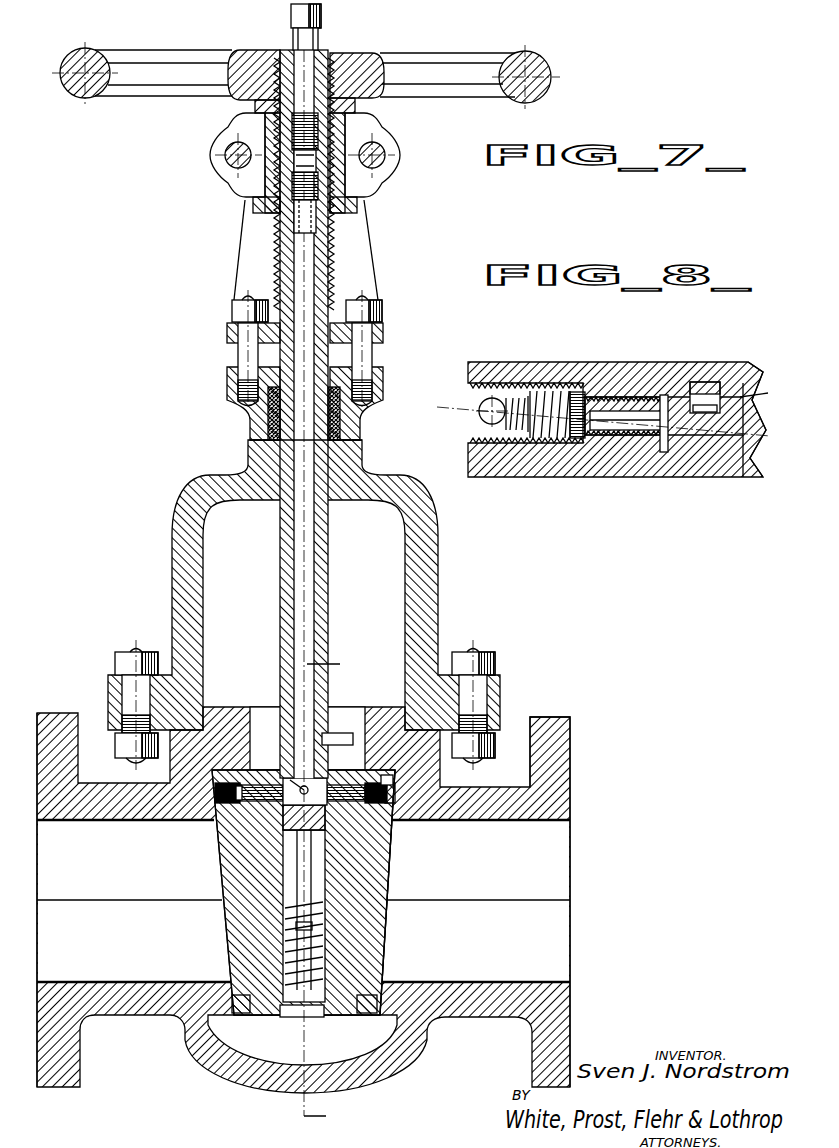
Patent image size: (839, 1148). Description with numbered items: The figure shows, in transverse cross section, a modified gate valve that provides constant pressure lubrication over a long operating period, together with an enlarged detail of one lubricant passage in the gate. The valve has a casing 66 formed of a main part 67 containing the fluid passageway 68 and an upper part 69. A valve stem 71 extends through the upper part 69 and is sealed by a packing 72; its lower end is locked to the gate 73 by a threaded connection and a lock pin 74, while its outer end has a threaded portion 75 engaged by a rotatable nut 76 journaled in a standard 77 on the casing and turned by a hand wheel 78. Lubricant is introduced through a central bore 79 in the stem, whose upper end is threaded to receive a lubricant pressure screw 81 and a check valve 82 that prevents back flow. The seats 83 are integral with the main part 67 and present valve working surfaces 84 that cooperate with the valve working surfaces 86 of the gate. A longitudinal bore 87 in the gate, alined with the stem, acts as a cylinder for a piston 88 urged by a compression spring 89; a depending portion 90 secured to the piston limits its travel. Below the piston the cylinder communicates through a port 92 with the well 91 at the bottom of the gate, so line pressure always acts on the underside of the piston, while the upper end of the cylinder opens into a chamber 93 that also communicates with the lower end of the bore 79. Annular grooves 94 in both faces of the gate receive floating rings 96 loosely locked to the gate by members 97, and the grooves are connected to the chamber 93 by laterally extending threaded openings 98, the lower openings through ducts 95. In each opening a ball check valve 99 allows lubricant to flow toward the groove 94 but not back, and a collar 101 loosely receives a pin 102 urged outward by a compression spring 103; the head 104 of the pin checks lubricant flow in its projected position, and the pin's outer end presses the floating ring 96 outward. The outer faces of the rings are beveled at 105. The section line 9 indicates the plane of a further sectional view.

In FIG. 7, the section line 9- 9 is at (340, 661).
In FIG. 7, the casing 66 is at (562, 720).
In FIG. 8, the casing 66 is at (752, 470).
In FIG. 7, the main part 67 is at (550, 756).
In FIG. 8, the main part 67 is at (750, 368).
In FIG. 7, the fluid passageway 68 is at (553, 838).
In FIG. 7, the upper part 69 is at (430, 580).
In FIG. 7, the valve stem 71 is at (326, 578).
In FIG. 7, the packing 72 is at (268, 420).
In FIG. 7, the gate 73 is at (357, 765).
In FIG. 8, the gate 73 is at (518, 462).
In FIG. 7, the lock pin 74 is at (340, 733).
In FIG. 7, the threaded portion 75 is at (330, 267).
In FIG. 7, the rotatable nut 76 is at (255, 103).
In FIG. 7, the standard 77 is at (240, 262).
In FIG. 7, the hand wheel 78 is at (76, 91).
In FIG. 7, the central bore 79 is at (300, 449).
In FIG. 7, the lubricant pressure screw 81 is at (319, 40).
In FIG. 7, the check valve 82 is at (300, 218).
In FIG. 7, the seats 83 is at (212, 808).
In FIG. 8, the seats 83 is at (742, 455).
In FIG. 7, the valve working surfaces 84 is at (186, 812).
In FIG. 8, the valve working surfaces 84 is at (764, 388).
In FIG. 7, the valve working surfaces 86 is at (226, 958).
In FIG. 7, the bore 87 is at (290, 906).
In FIG. 7, the piston 88 is at (284, 818).
In FIG. 7, the compression spring 89 is at (322, 926).
In FIG. 7, the depending portion 90 is at (300, 870).
In FIG. 7, the well 91 is at (263, 1047).
In FIG. 7, the port 92 is at (320, 1047).
In FIG. 7, the chamber 93 is at (396, 848).
In FIG. 8, the chamber 93 is at (435, 430).
In FIG. 7, the annular grooves 94 is at (224, 760).
In FIG. 8, the annular grooves 94 is at (664, 452).
In FIG. 7, the ducts 95 is at (275, 727).
In FIG. 7, the floating rings 96 is at (400, 800).
In FIG. 8, the floating rings 96 is at (700, 445).
In FIG. 7, the members 97 is at (388, 775).
In FIG. 8, the members 97 is at (705, 382).
In FIG. 8, the threaded openings 98 is at (520, 438).
In FIG. 8, the check valves 99 is at (496, 395).
In FIG. 7, the collar 101 is at (242, 776).
In FIG. 8, the collar 101 is at (610, 397).
In FIG. 8, the pin 102 is at (608, 430).
In FIG. 8, the compression spring 103 is at (538, 392).
In FIG. 8, the head 104 is at (577, 392).
In FIG. 8, the beveled outer faces 105 is at (718, 409).